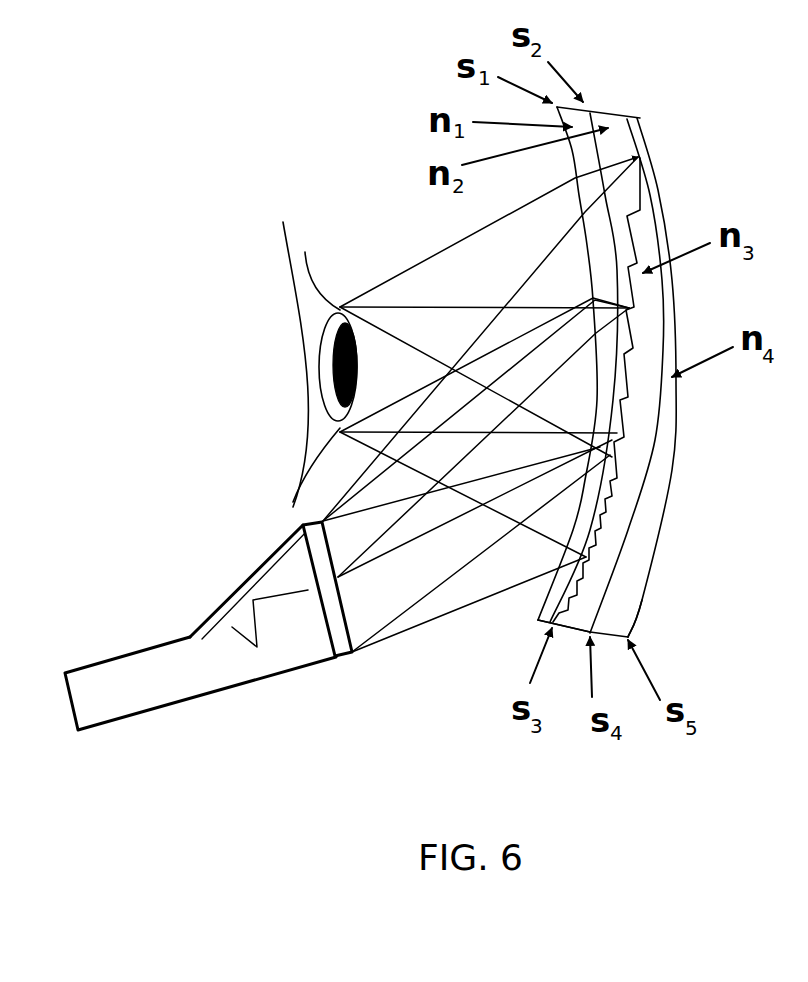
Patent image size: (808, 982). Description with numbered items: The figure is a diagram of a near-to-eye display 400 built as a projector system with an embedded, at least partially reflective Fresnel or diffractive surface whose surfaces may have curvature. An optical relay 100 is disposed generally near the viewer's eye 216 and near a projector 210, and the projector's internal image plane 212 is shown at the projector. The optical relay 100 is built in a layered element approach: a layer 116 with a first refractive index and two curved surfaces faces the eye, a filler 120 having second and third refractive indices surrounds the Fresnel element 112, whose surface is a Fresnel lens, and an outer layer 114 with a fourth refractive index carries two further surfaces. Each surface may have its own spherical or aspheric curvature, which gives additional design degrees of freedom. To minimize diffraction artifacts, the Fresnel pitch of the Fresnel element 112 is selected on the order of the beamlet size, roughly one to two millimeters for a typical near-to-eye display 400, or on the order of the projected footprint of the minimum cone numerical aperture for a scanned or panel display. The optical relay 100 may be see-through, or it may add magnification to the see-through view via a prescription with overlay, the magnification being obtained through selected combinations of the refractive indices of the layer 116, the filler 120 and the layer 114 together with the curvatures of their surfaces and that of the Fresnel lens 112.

The near-to-eye display 400 is at (187, 75).
The optical relay 100 is at (644, 128).
The Fresnel element 112 is at (617, 478).
The layer 114 is at (653, 566).
The layer 116 is at (538, 620).
The filler 120 is at (617, 122).
The projector 210 is at (180, 636).
The internal image plane 212 is at (360, 660).
The viewer's eye 216 is at (284, 228).